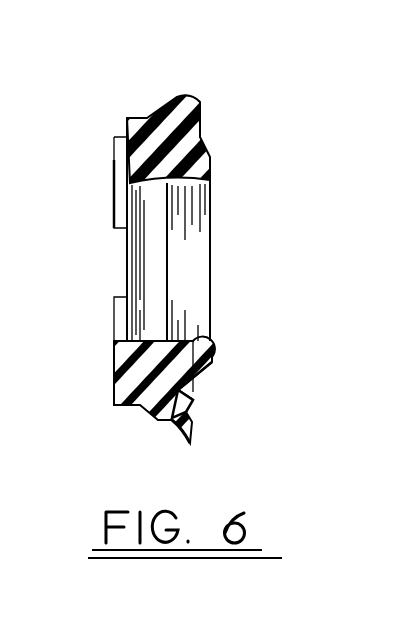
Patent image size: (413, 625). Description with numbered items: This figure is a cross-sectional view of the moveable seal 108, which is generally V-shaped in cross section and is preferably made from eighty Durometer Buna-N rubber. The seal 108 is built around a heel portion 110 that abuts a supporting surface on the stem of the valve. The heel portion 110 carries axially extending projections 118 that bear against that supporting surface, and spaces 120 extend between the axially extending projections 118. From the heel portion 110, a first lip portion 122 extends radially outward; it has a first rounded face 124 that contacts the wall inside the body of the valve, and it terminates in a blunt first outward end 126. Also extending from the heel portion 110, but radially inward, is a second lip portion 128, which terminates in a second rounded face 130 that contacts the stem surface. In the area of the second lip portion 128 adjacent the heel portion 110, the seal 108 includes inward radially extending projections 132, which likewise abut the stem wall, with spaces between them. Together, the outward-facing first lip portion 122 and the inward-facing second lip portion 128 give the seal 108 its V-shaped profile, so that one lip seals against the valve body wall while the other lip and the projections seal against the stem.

The seal 108 is at (203, 80).
The heel portion 110 is at (112, 128).
The axially extending projections 118 is at (114, 194).
The spaces 120 is at (128, 269).
The first lip portion 122 is at (195, 393).
The first rounded face 124 is at (181, 420).
The blunt first outward end 126 is at (190, 412).
The second lip portion 128 is at (205, 175).
The second rounded face 130 is at (203, 347).
The inward radially extending projections 132 is at (130, 337).